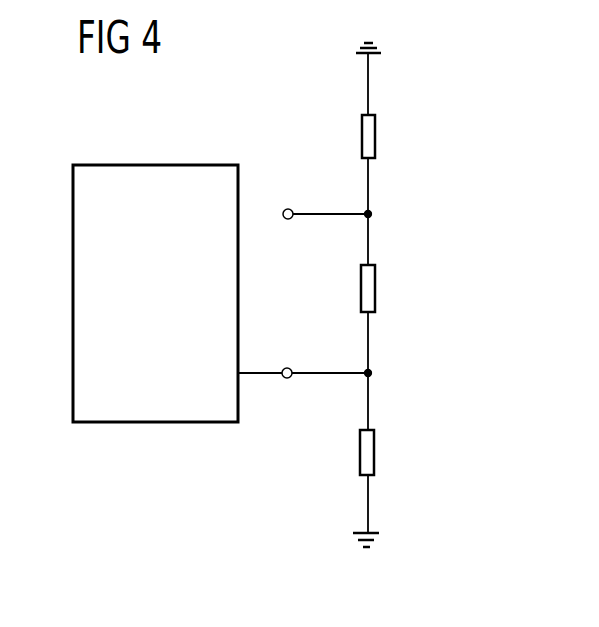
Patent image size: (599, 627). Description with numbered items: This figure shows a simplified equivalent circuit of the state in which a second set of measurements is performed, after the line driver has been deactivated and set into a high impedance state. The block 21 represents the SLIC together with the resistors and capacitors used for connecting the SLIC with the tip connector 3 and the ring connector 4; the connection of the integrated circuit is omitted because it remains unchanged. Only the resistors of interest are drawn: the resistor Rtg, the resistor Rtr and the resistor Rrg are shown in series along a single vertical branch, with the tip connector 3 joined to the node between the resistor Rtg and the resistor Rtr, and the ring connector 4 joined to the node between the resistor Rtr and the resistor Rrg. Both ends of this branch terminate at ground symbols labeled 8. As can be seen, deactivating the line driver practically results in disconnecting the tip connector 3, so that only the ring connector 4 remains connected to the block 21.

The block 21 is at (165, 165).
The tip connector 3 is at (291, 210).
The ring connector 4 is at (290, 369).
The ground 8 is at (380, 52).
The resistor Rtg is at (375, 137).
The resistor Rtr is at (375, 288).
The resistor Rrg is at (374, 453).